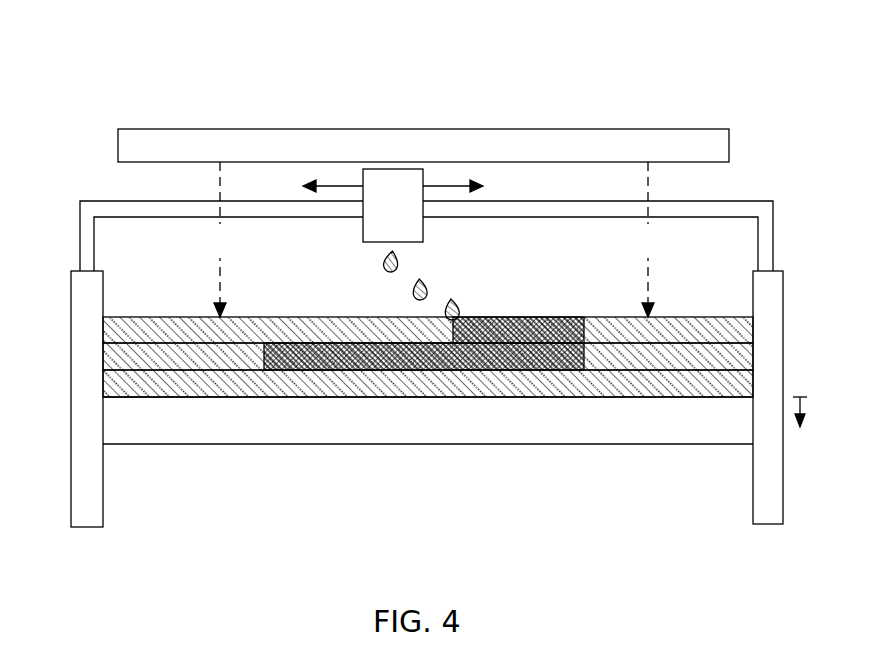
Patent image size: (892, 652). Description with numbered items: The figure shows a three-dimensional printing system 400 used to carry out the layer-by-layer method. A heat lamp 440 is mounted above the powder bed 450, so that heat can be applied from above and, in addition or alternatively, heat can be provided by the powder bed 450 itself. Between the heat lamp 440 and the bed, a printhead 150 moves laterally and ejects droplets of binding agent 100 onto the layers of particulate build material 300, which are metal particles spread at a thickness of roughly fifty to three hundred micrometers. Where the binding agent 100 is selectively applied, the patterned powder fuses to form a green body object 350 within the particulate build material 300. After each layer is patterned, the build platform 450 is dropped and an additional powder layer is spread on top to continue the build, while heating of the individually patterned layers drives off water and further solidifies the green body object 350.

The three-dimensional printing system 400 is at (146, 67).
The heat lamp 440 is at (405, 156).
The printhead 150 is at (375, 217).
The binding agent 100 is at (383, 264).
The particulate build material 300 is at (165, 352).
The green body object 350 is at (390, 355).
The powder bed 450 is at (590, 408).